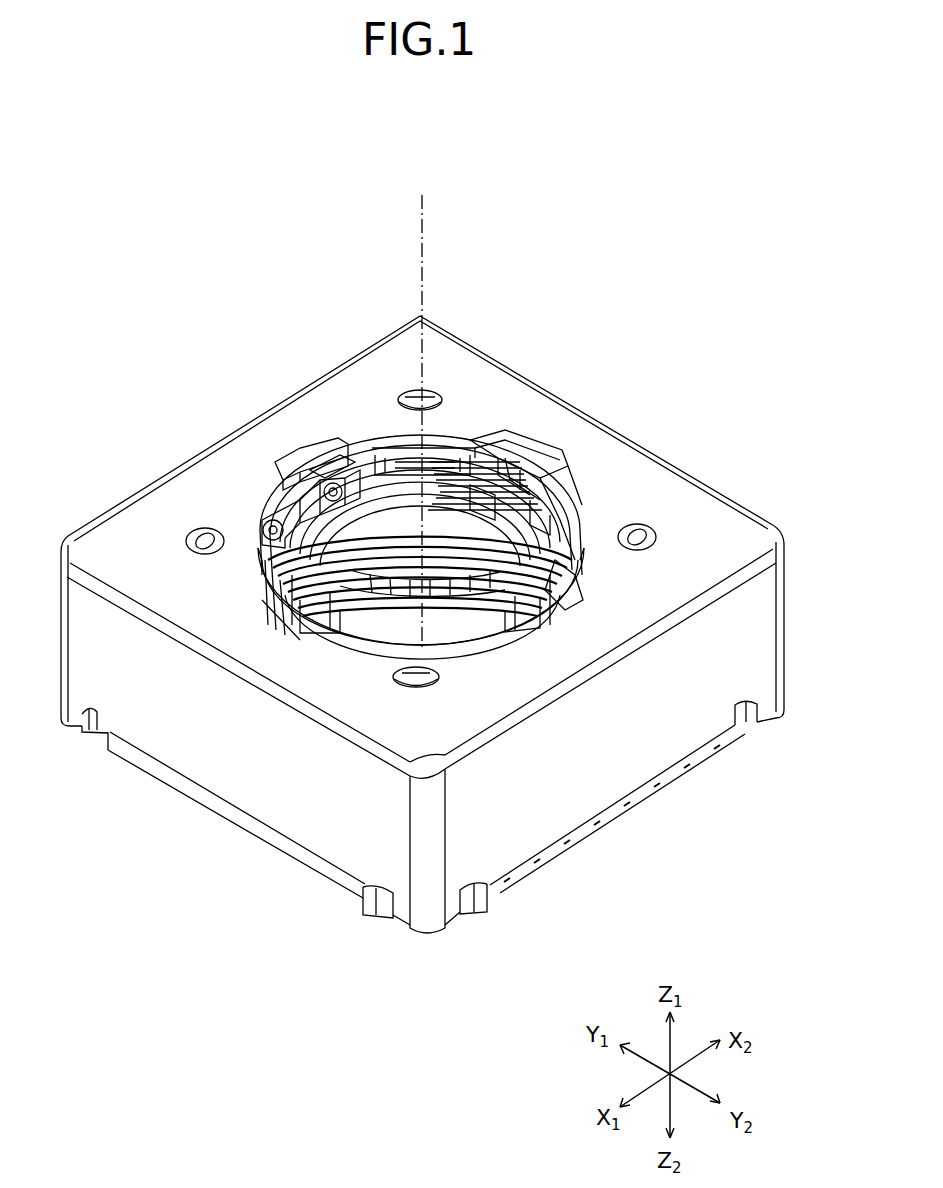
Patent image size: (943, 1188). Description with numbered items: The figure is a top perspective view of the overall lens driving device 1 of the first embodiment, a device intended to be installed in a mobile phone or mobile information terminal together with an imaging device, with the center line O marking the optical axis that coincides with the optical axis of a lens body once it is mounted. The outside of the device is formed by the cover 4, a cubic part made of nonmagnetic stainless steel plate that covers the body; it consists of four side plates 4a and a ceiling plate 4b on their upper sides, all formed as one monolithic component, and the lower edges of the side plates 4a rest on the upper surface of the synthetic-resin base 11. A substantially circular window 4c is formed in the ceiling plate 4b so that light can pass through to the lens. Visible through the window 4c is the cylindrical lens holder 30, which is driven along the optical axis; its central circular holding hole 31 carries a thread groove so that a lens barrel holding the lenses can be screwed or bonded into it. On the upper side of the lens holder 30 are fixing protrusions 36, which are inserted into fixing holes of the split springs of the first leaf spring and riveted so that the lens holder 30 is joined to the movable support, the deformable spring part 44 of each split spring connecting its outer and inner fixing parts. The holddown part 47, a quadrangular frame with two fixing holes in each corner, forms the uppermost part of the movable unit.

The lens driving device 1 is at (630, 230).
The cover 4 is at (738, 490).
The side plates 4a is at (663, 747).
The ceiling plate 4b is at (553, 412).
The window 4c is at (346, 442).
The base 11 is at (522, 607).
The lens holder 30 is at (393, 565).
The holding hole 31 is at (570, 580).
The fixing protrusions 36 is at (333, 490).
The deformable spring part 44 is at (457, 445).
The holddown part 47 is at (553, 470).